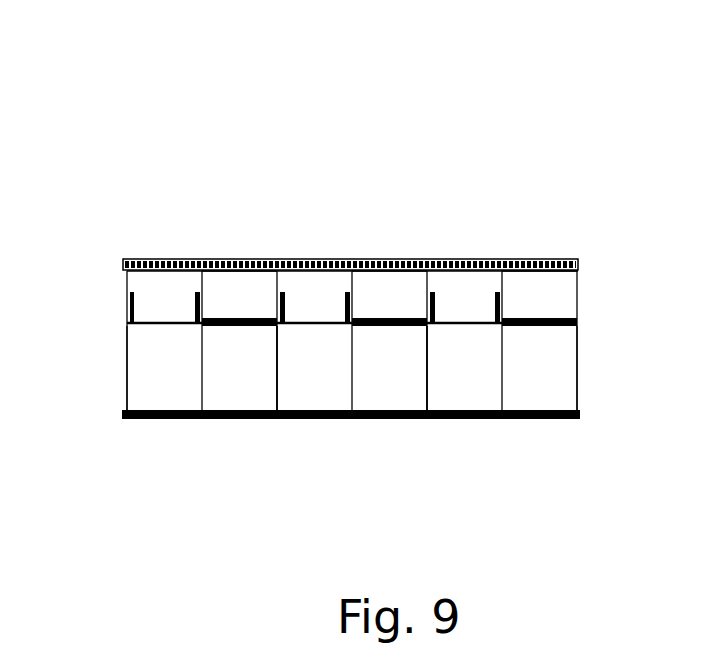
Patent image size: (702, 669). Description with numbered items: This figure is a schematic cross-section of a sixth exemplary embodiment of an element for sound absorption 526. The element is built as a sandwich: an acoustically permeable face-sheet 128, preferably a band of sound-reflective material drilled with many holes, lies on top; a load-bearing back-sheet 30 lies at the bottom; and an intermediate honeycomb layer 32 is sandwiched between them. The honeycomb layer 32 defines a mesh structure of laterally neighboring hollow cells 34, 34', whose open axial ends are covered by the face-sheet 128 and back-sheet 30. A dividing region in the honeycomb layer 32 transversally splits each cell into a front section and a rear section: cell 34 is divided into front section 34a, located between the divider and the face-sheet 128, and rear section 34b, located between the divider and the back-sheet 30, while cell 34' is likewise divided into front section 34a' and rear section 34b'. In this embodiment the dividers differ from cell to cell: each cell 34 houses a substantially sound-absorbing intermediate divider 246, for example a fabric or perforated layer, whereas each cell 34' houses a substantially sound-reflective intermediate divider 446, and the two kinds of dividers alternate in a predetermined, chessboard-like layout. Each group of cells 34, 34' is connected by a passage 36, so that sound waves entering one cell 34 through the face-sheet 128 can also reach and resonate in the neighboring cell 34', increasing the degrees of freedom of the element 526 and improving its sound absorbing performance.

The element for sound absorption 526 is at (283, 90).
The honeycomb layer 32 is at (118, 372).
The face-sheet 128 is at (542, 248).
The back-sheet 30 is at (352, 428).
The cell 34 is at (316, 340).
The cell 34' is at (415, 341).
The front section 34a is at (352, 297).
The rear section 34b is at (311, 368).
The front section 34a' is at (389, 287).
The rear section 34b' is at (397, 368).
The sound-absorbing intermediate divider 246 is at (128, 307).
The sound-reflective intermediate divider 446 is at (580, 319).
The passage 36 is at (203, 382).